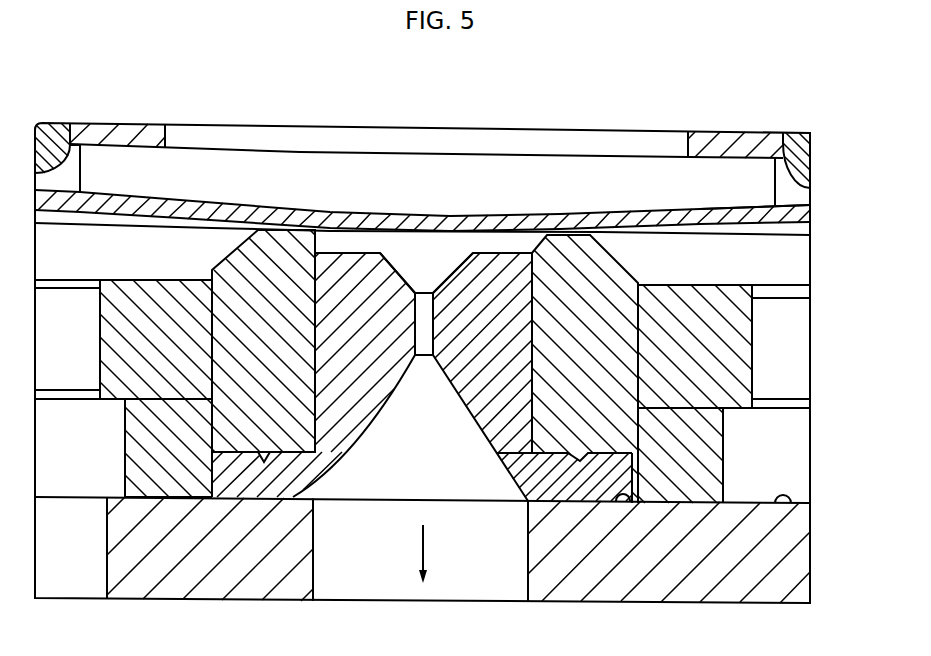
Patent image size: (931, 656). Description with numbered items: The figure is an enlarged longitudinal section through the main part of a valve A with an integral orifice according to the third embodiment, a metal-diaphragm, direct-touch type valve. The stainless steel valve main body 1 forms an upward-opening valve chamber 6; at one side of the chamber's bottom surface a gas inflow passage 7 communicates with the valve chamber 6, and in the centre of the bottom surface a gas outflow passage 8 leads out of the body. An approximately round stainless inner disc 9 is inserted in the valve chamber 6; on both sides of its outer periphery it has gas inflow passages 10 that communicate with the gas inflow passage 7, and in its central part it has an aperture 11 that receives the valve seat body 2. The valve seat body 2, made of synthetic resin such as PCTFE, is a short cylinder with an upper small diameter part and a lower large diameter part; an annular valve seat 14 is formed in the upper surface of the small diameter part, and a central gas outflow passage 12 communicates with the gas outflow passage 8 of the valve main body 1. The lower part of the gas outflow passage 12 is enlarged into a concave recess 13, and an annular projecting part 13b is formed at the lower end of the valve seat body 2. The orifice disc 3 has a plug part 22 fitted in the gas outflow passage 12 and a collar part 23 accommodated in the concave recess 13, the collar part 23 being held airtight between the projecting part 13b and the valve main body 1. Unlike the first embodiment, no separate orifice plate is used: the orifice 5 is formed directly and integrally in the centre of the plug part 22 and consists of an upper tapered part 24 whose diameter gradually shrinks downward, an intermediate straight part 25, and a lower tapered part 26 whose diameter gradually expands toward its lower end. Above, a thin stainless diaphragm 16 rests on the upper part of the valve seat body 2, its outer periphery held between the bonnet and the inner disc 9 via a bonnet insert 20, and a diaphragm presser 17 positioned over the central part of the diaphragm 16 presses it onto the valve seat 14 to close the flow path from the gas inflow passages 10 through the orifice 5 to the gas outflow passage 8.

The valve main body 1 is at (657, 590).
The valve seat body 2 is at (712, 482).
The orifice disc 3 is at (488, 244).
The orifice 5 is at (428, 368).
The valve chamber 6 is at (790, 504).
The gas inflow passage 7 is at (108, 575).
The gas outflow passage 8 is at (314, 573).
The inner disc 9 is at (168, 375).
The gas inflow passages 10 is at (100, 386).
The aperture 11 is at (213, 298).
The gas outflow passage 12 is at (308, 212).
The concave recess 13 is at (614, 495).
The projecting part 13b is at (576, 462).
The valve seat 14 is at (570, 240).
The diaphragm 16 is at (701, 217).
The diaphragm presser 17 is at (348, 175).
The bonnet insert 20 is at (787, 143).
The plug part 22 is at (507, 293).
The collar part 23 is at (264, 482).
The upper tapered part 24 is at (452, 268).
The intermediate straight part 25 is at (415, 290).
The lower tapered part 26 is at (357, 440).
The valve with an integral orifice A is at (838, 150).